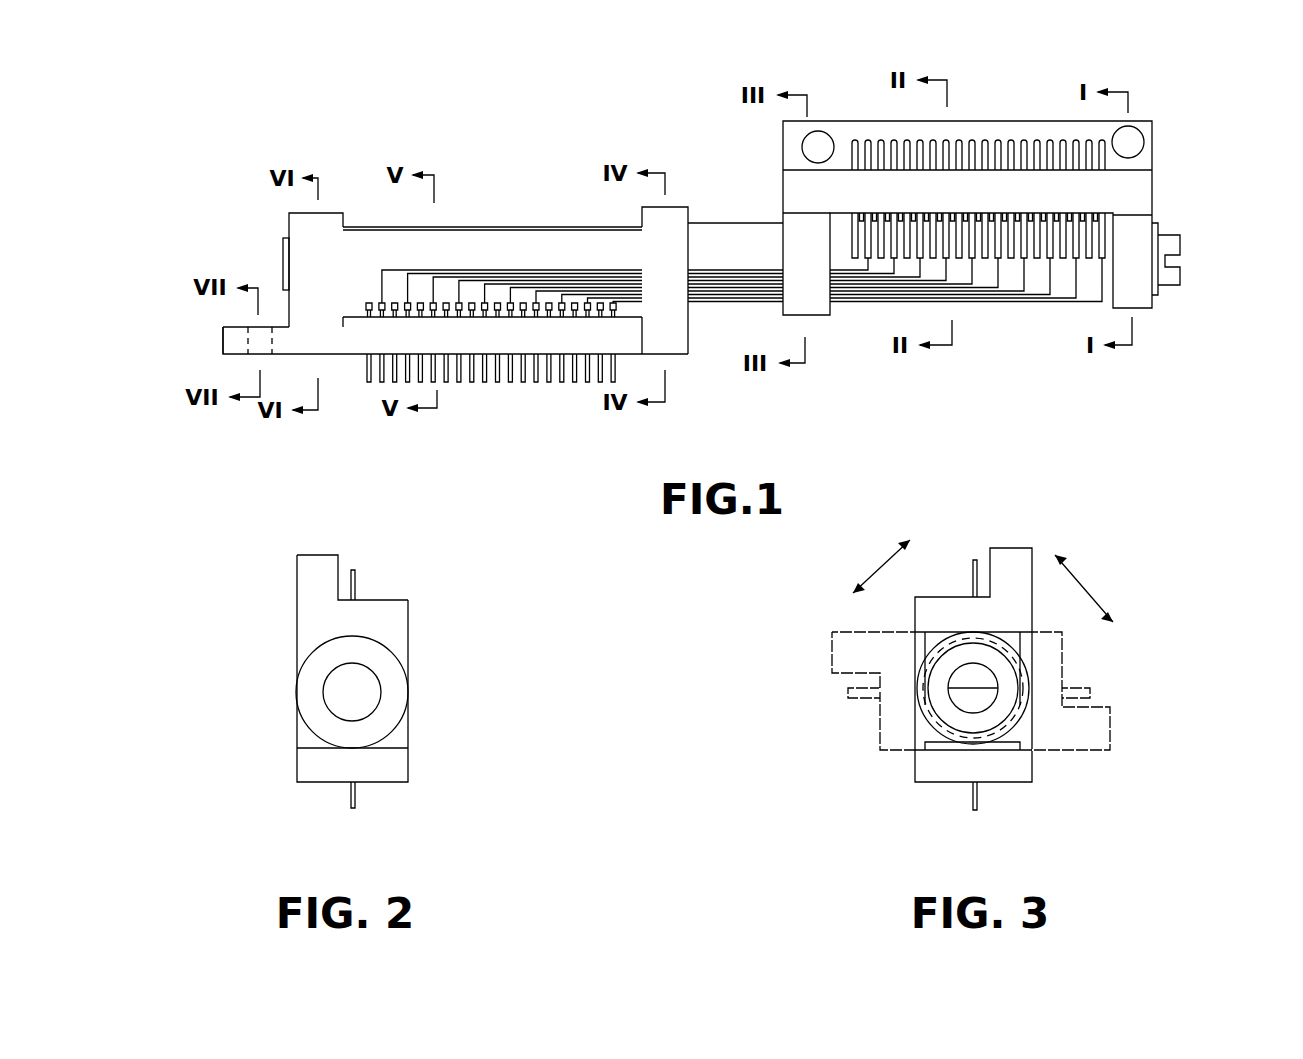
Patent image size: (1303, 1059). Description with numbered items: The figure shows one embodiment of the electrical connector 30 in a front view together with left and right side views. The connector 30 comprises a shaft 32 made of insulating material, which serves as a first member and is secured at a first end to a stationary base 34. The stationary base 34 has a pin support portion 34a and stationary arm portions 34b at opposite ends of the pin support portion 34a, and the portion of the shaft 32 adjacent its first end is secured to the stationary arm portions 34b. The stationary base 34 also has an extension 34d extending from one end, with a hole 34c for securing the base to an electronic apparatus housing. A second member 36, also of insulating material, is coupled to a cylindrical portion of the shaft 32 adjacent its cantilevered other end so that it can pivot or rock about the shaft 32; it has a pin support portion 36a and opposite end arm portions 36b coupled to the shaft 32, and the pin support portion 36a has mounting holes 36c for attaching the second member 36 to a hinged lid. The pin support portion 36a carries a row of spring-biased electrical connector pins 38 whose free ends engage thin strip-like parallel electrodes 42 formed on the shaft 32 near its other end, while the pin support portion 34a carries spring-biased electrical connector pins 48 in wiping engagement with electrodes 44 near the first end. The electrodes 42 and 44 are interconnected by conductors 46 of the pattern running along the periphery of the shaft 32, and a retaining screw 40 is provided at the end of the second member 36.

In FIG. 1, the connector 30 is at (546, 188).
In FIG. 1, the shaft 32 is at (720, 249).
In FIG. 2, the shaft 32 is at (366, 690).
In FIG. 1, the stationary base 34 is at (330, 213).
In FIG. 2, the stationary base 34 is at (393, 737).
In FIG. 1, the pin support portion 34a is at (545, 346).
In FIG. 1, the stationary arm portions 34b is at (289, 218).
In FIG. 1, the hole 34c is at (248, 327).
In FIG. 1, the extension 34d is at (236, 345).
In FIG. 1, the second member 36 is at (1160, 161).
In FIG. 2, the second member 36 is at (315, 562).
In FIG. 3, the second member 36 is at (1035, 548).
In FIG. 1, the pin support portion 36a is at (1118, 192).
In FIG. 3, the pin support portion 36a is at (935, 597).
In FIG. 1, the end arm portions 36b is at (810, 305).
In FIG. 3, the end arm portions 36b is at (1010, 715).
In FIG. 1, the mounting holes 36c is at (823, 133).
In FIG. 1, the electrical connector pins 38 is at (1013, 138).
In FIG. 2, the electrical connector pins 38 is at (358, 583).
In FIG. 3, the electrical connector pins 38 is at (975, 560).
In FIG. 1, the retaining screw 40 is at (1180, 270).
In FIG. 3, the retaining screw 40 is at (980, 678).
In FIG. 1, the electrodes 42 is at (975, 262).
In FIG. 1, the electrodes 44 is at (368, 300).
In FIG. 1, the conductors 46 is at (716, 310).
In FIG. 1, the electrical connector pins 48 is at (455, 383).
In FIG. 2, the electrical connector pins 48 is at (358, 800).
In FIG. 3, the electrical connector pins 48 is at (978, 803).